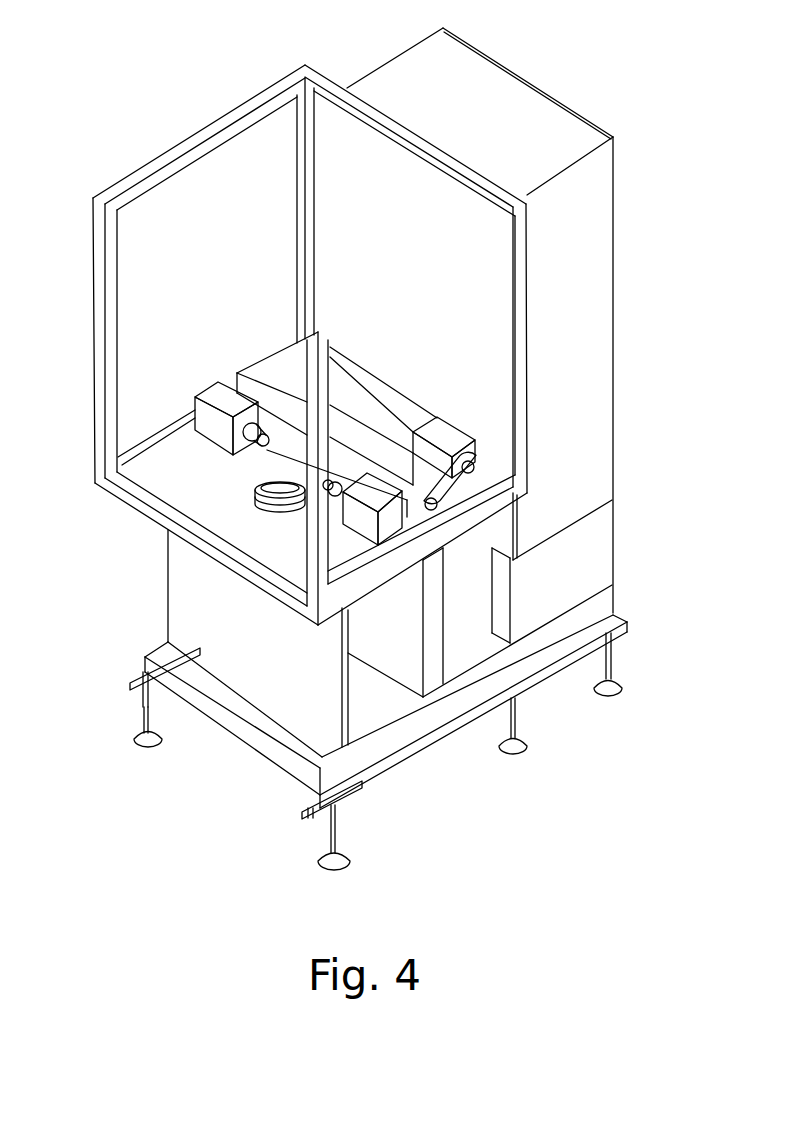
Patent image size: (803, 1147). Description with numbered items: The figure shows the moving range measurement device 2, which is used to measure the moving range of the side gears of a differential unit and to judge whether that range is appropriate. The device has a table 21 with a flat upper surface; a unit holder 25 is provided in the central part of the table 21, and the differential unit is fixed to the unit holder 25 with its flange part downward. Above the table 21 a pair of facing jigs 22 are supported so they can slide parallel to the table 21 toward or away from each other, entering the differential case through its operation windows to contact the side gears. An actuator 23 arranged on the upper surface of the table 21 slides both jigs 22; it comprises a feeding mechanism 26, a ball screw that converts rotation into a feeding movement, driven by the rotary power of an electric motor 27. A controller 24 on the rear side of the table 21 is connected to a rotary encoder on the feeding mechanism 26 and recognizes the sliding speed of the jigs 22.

The moving range measurement device 2 is at (333, 448).
The table 21 is at (160, 479).
The jig 22 is at (196, 408).
The actuator 23 is at (258, 318).
The controller 24 is at (519, 90).
The unit holder 25 is at (256, 492).
The feeding mechanism 26 is at (250, 367).
The electric motor 27 is at (448, 433).